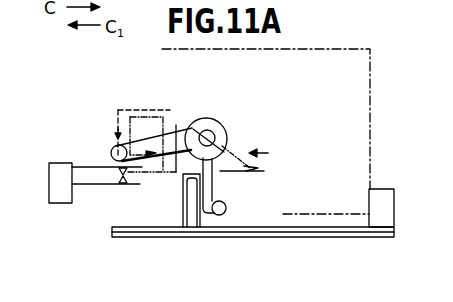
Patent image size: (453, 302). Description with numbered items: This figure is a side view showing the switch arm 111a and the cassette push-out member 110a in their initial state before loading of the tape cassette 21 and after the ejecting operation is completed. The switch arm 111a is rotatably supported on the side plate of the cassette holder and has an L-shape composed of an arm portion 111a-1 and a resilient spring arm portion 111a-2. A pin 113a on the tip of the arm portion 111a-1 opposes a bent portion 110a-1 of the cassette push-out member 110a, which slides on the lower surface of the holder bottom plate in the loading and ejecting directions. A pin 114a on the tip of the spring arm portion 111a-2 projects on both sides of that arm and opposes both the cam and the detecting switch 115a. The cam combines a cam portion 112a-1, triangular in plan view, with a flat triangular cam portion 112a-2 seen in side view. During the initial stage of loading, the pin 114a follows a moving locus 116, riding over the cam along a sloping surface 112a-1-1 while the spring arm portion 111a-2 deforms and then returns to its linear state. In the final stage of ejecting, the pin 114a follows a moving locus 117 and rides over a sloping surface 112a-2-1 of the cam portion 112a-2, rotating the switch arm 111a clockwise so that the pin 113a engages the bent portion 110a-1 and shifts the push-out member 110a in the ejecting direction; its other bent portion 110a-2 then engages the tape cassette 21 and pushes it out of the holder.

The tape cassette 21 is at (371, 97).
The cassette push-out member 110a is at (302, 238).
The bent portion 110a-1 is at (192, 213).
The bent portion 110a-2 is at (379, 194).
The switch arm 111a is at (219, 121).
The arm portion 111a-1 is at (213, 186).
The resilient spring arm portion 111a-2 is at (174, 121).
The cam portion 112a-1 is at (150, 115).
The sloping surface 112a-1-1 is at (128, 109).
The cam portion 112a-2 is at (262, 170).
The sloping surface 112a-2-1 is at (248, 150).
The pin 113a is at (227, 210).
The pin 114a is at (112, 149).
The detecting switch 115a is at (90, 185).
The moving locus 116 is at (178, 173).
The moving locus 117 is at (190, 127).